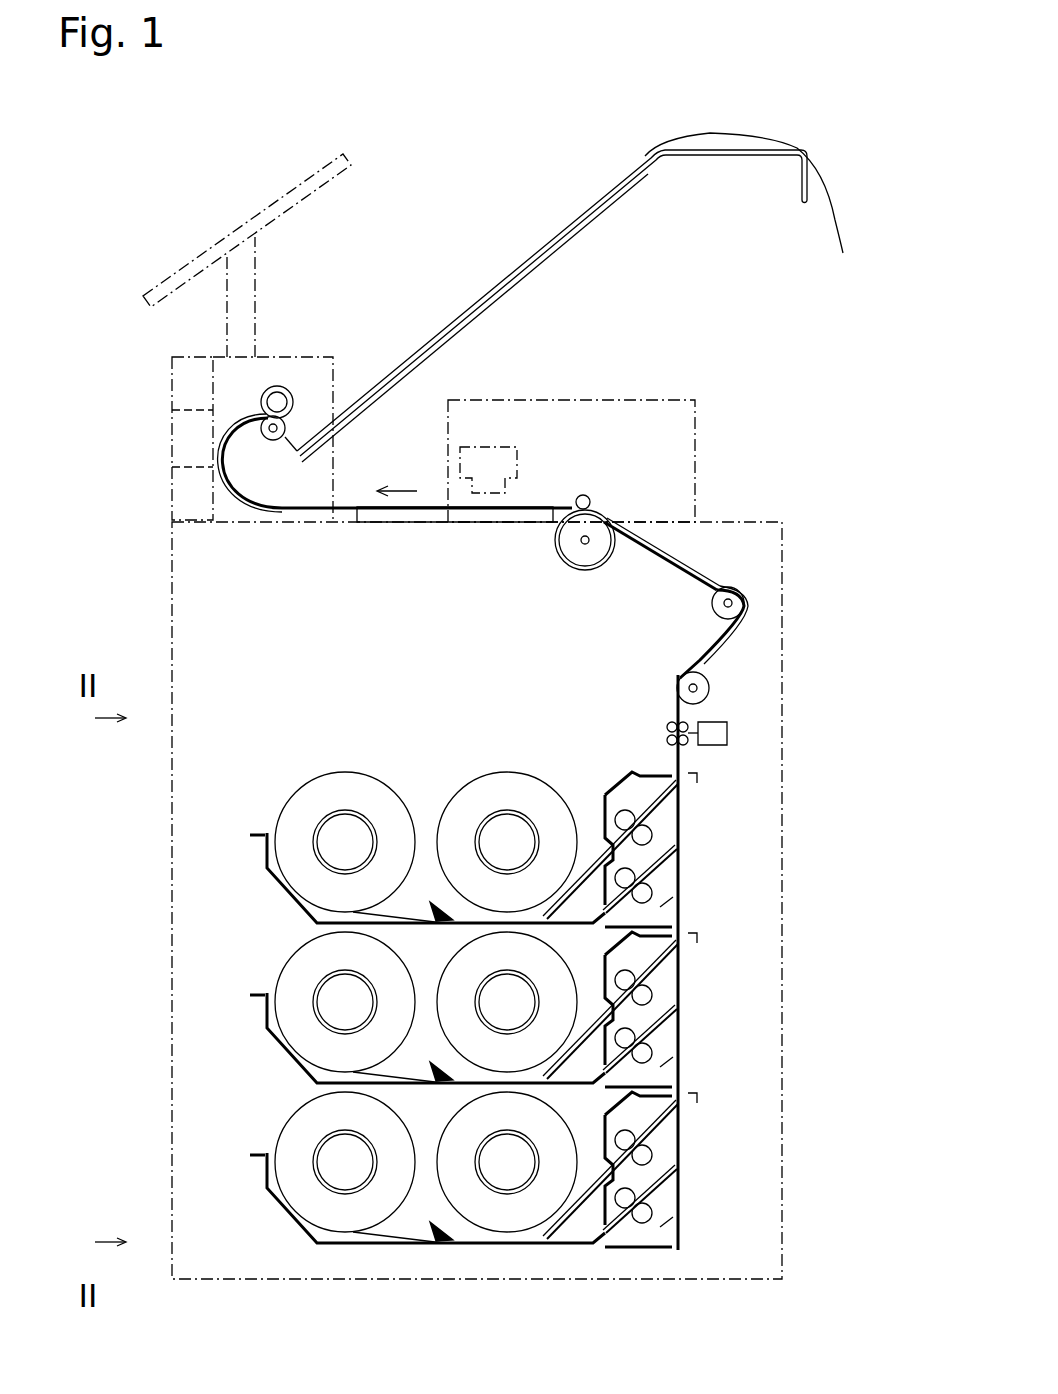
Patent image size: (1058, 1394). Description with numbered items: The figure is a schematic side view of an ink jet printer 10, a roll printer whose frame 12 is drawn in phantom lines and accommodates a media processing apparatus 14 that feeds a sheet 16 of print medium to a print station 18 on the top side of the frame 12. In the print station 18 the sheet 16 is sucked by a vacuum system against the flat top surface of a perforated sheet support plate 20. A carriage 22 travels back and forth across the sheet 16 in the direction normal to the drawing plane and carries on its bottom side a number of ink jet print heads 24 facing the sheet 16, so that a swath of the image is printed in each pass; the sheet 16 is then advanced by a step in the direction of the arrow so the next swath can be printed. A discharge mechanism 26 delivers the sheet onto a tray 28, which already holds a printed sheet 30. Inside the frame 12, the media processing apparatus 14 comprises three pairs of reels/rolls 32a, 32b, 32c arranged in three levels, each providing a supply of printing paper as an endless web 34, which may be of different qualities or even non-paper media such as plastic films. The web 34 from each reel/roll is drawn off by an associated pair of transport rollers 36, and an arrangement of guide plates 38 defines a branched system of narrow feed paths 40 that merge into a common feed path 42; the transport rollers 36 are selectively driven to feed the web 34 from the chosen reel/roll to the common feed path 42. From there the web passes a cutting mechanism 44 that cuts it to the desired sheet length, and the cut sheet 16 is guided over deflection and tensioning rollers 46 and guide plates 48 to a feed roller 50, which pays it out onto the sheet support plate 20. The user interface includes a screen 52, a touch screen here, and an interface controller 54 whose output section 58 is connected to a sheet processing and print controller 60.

The ink jet printer 10 is at (479, 195).
The frame 12 is at (782, 562).
The media processing apparatus 14 is at (760, 683).
The sheet 16 is at (585, 508).
The print station 18 is at (702, 452).
The sheet support plate 20 is at (387, 522).
The carriage 22 is at (497, 447).
The ink jet print heads 24 is at (490, 492).
The discharge mechanism 26 is at (307, 378).
The tray 28 is at (598, 215).
The printed sheet 30 is at (830, 227).
The pair of reels/rolls 32a is at (335, 790).
The pair of reels/rolls 32b is at (307, 970).
The pair of reels/rolls 32c is at (308, 1136).
The endless web 34 is at (597, 880).
The transport rollers 36 is at (642, 998).
The guide plates 38 is at (263, 843).
The feed paths 40 is at (660, 1195).
The common feed path 42 is at (680, 785).
The cutting mechanism 44 is at (727, 735).
The deflection and tensioning rollers 46 is at (712, 603).
The guide plates 48 is at (710, 555).
The feed roller 50 is at (600, 522).
The screen 52 is at (203, 253).
The interface controller 54 is at (192, 383).
The output section 58 is at (192, 433).
The sheet processing and print controller 60 is at (192, 492).